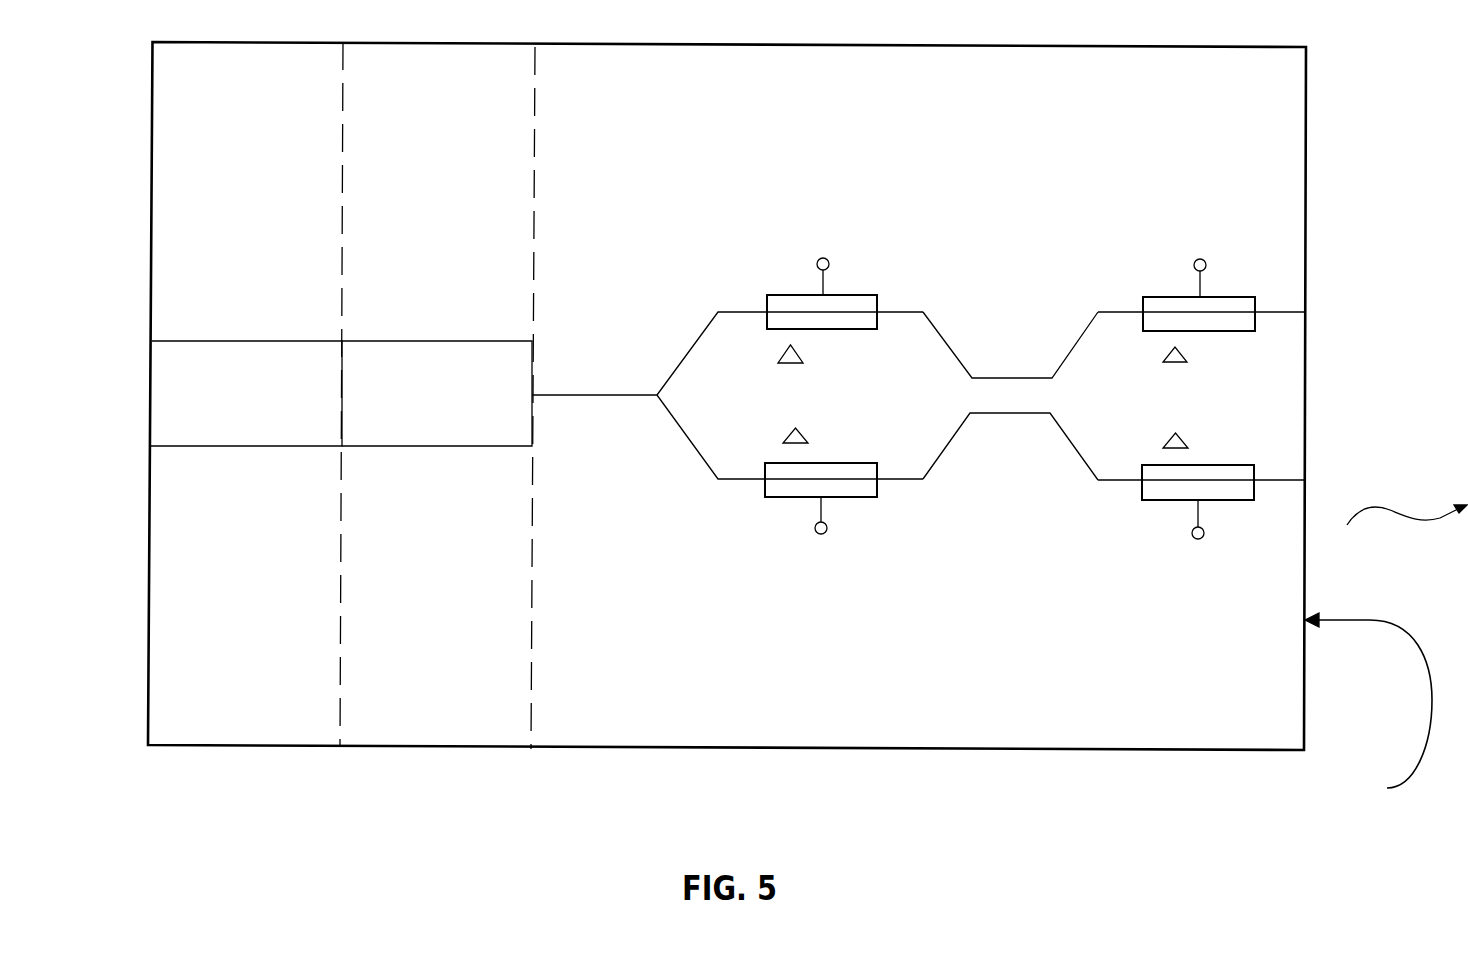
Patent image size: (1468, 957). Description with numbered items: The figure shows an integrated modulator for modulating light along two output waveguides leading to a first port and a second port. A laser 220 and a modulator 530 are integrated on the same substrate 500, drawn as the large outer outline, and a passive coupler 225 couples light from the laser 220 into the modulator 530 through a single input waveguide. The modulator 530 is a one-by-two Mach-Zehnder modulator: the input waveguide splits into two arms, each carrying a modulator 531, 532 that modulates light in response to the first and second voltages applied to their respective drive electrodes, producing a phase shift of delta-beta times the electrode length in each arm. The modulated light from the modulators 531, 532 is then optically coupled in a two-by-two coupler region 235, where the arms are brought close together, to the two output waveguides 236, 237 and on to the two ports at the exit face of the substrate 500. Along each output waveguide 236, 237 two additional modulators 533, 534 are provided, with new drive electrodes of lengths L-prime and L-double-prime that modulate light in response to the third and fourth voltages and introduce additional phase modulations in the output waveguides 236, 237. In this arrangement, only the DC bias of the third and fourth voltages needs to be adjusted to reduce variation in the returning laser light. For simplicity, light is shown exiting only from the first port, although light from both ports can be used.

The substrate 500 is at (807, 433).
The modulator 530 is at (1282, 125).
The laser 220 is at (257, 451).
The passive coupler 225 is at (440, 451).
The 2×2 coupler region 235 is at (1033, 380).
The output waveguide 236 is at (1082, 340).
The output waveguide 237 is at (1070, 450).
The modulator 531 is at (767, 303).
The modulator 532 is at (765, 485).
The additional modulator 533 is at (1143, 310).
The additional modulator 534 is at (1142, 488).